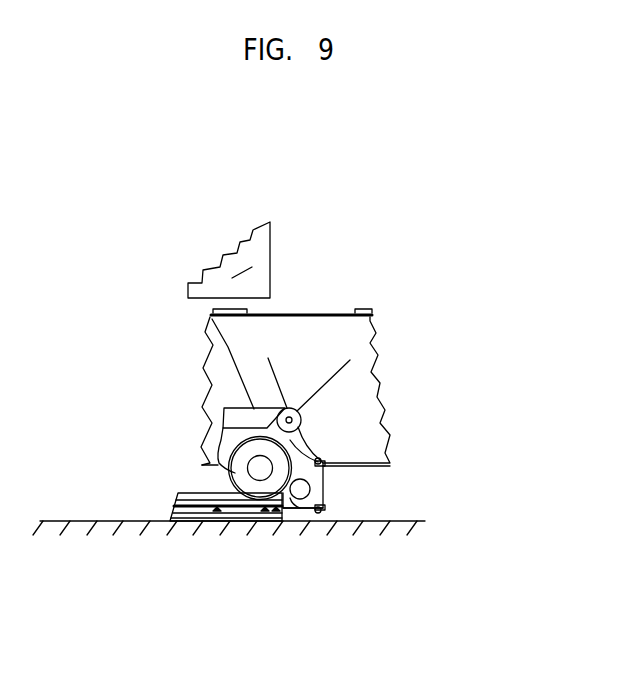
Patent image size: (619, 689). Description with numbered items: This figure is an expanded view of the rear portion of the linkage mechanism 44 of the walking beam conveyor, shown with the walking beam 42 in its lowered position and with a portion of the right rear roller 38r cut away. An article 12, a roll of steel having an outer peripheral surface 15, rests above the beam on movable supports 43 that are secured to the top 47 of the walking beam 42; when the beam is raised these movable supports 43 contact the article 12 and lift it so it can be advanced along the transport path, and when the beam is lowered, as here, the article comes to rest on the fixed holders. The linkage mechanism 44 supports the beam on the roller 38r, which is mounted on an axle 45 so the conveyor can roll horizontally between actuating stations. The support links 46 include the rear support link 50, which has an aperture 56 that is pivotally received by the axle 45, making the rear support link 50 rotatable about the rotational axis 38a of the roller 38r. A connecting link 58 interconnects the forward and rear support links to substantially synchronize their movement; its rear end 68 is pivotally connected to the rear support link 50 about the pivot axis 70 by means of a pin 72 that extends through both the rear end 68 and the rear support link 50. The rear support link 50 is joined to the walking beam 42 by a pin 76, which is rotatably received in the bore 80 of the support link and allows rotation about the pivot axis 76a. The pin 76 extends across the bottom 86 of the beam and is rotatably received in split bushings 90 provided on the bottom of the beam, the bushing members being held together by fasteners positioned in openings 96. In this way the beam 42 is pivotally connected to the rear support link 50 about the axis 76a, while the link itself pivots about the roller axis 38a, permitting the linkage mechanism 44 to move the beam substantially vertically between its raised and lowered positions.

The article 12 is at (256, 202).
The outer peripheral surface 15 is at (312, 199).
The movable support 43 is at (246, 312).
The top of the beam 47 is at (322, 314).
The pivot point or axis 70 is at (268, 358).
The pin 72 is at (350, 360).
The walking beam 42 is at (310, 399).
The support link 46 is at (300, 432).
The rear support link 50 is at (435, 431).
The bottom of the beam 86 is at (411, 466).
The aperture or bore 80 is at (447, 483).
The opening 96 is at (268, 468).
The split bushing 90 is at (330, 494).
The pin 76 is at (327, 497).
The rotational axis or pivot point 76a is at (307, 496).
The rotational axis 38a is at (262, 470).
The right rear roller 38r is at (228, 495).
The axle 45 is at (261, 470).
The aperture 56 is at (262, 470).
The connecting link 58 is at (242, 419).
The rear end of the connecting link 68 is at (224, 343).
The linkage mechanism 44 is at (158, 457).